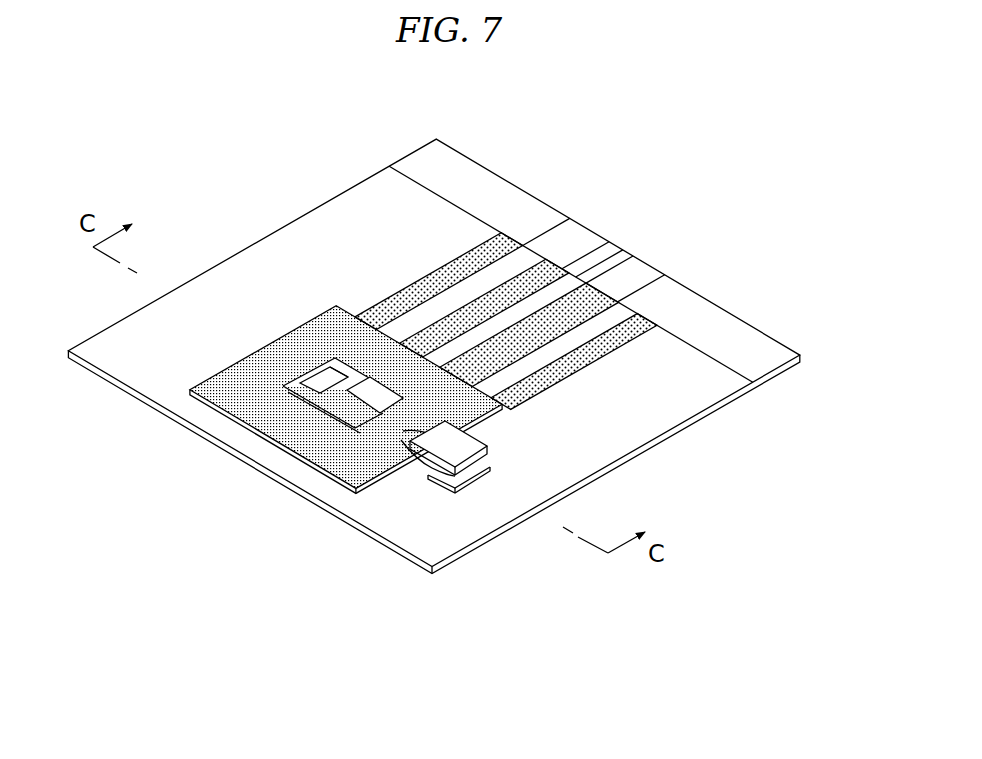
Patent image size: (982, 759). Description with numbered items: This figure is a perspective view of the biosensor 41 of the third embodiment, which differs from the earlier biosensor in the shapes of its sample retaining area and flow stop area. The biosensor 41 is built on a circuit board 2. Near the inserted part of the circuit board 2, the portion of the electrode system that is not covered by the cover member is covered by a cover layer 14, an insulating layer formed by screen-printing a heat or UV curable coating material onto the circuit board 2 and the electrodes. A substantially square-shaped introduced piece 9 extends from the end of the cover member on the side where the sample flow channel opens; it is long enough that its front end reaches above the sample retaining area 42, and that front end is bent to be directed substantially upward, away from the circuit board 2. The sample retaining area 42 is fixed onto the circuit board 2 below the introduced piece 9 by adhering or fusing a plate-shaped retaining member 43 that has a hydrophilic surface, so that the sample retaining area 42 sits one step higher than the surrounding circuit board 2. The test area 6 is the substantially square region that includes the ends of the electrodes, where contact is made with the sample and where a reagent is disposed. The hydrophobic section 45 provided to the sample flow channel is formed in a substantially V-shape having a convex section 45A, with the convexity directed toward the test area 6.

The biosensor 41 is at (445, 350).
The circuit board 2 is at (393, 520).
The cover layer 14 is at (600, 335).
The introduced piece 9 is at (480, 436).
The hydrophobic section 45 is at (410, 472).
The convex section 45A is at (392, 436).
The test area 6 is at (350, 415).
The retaining member 43 is at (488, 460).
The sample retaining area 42 is at (442, 504).